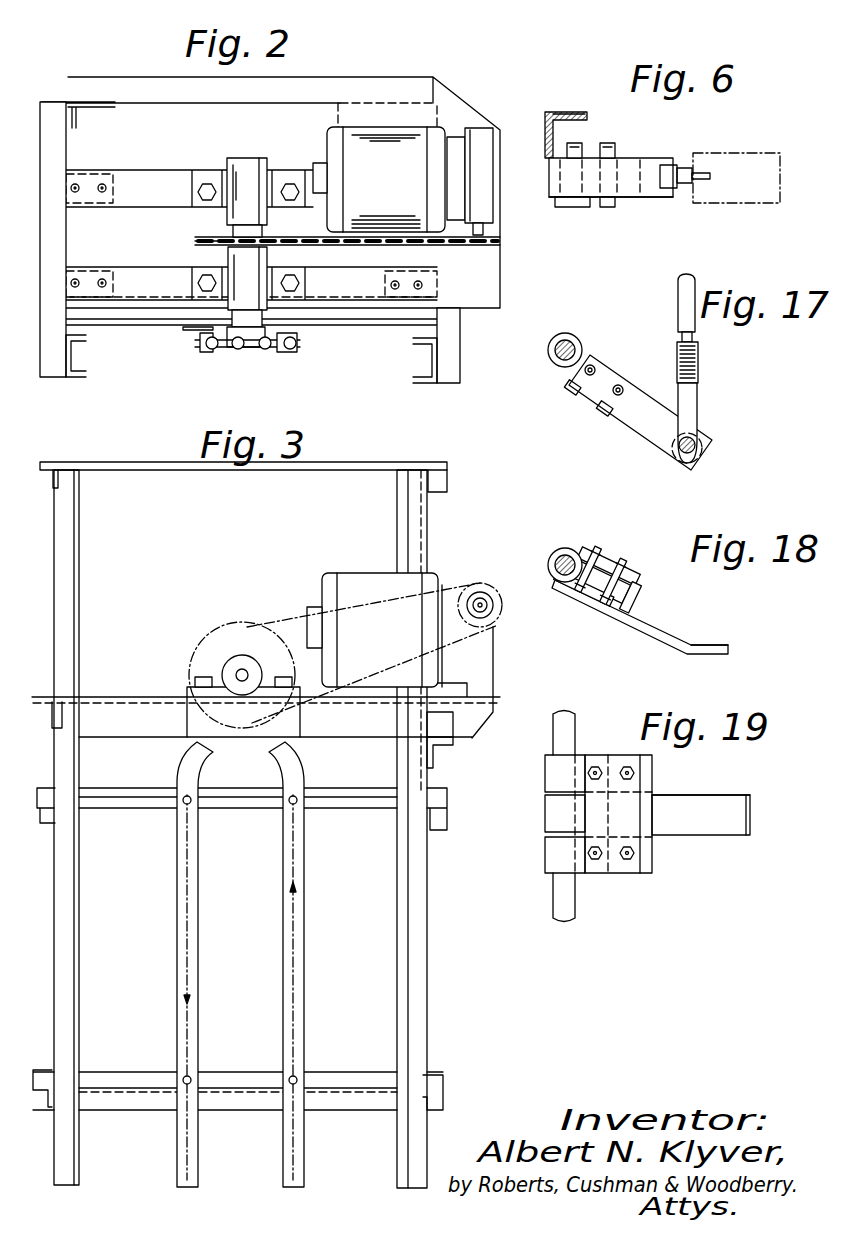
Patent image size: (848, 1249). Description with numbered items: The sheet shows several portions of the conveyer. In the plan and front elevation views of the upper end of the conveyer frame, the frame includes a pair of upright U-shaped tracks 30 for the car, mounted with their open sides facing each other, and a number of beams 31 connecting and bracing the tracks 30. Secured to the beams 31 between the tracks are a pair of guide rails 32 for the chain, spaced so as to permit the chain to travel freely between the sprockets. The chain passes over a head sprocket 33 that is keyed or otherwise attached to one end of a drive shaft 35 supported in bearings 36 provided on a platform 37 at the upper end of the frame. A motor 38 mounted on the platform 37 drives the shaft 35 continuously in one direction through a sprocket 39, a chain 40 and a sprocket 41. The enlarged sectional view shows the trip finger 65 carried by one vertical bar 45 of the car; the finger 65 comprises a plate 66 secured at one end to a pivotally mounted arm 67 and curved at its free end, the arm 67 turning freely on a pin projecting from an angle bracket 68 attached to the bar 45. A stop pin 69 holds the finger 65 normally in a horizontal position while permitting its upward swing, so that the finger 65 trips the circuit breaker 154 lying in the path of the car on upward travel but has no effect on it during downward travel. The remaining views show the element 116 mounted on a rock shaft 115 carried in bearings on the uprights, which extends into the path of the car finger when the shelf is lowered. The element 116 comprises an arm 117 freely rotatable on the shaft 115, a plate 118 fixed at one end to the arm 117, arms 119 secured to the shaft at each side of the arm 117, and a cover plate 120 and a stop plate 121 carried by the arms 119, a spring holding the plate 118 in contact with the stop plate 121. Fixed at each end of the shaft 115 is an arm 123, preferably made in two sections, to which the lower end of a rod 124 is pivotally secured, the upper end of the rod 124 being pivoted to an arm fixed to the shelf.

In FIG. 2, the upright U-shaped tracks 30 is at (72, 360).
In FIG. 3, the upright U-shaped tracks 30 is at (66, 940).
In FIG. 2, the beams 31 is at (380, 333).
In FIG. 3, the beams 31 is at (153, 793).
In FIG. 2, the guide rails 32 is at (196, 340).
In FIG. 3, the guide rails 32 is at (288, 911).
In FIG. 2, the head sprocket 33 is at (250, 348).
In FIG. 2, the drive shaft 35 is at (213, 316).
In FIG. 3, the drive shaft 35 is at (242, 672).
In FIG. 2, the bearings 36 is at (249, 167).
In FIG. 2, the platform 37 is at (143, 163).
In FIG. 2, the motor 38 is at (389, 179).
In FIG. 3, the motor 38 is at (378, 580).
In FIG. 2, the sprocket 39 is at (498, 240).
In FIG. 3, the sprocket 39 is at (485, 583).
In FIG. 2, the chain 40 is at (368, 243).
In FIG. 3, the chain 40 is at (282, 618).
In FIG. 2, the sprocket 41 is at (204, 238).
In FIG. 3, the sprocket 41 is at (225, 640).
In FIG. 6, the vertical bar 45 is at (571, 117).
In FIG. 6, the trip finger 65 is at (659, 151).
In FIG. 6, the plate 66 is at (630, 190).
In FIG. 6, the pivotally mounted arm 67 is at (558, 181).
In FIG. 6, the angle bracket 68 is at (546, 132).
In FIG. 6, the stop pin 69 is at (606, 200).
In FIG. 6, the circuit breaker 154 is at (748, 153).
In FIG. 17, the rock shaft 115 is at (582, 347).
In FIG. 18, the rock shaft 115 is at (563, 553).
In FIG. 19, the rock shaft 115 is at (560, 890).
In FIG. 18, the element 116 is at (646, 634).
In FIG. 19, the element 116 is at (668, 843).
In FIG. 18, the arm 117 is at (573, 590).
In FIG. 19, the arm 117 is at (562, 813).
In FIG. 18, the plate 118 is at (662, 636).
In FIG. 19, the plate 118 is at (701, 815).
In FIG. 18, the arms 119 is at (590, 548).
In FIG. 19, the arms 119 is at (563, 773).
In FIG. 18, the cover plate 120 is at (623, 563).
In FIG. 19, the cover plate 120 is at (628, 813).
In FIG. 18, the stop plate 121 is at (650, 603).
In FIG. 19, the stop plate 121 is at (653, 873).
In FIG. 17, the arm 123 is at (640, 423).
In FIG. 17, the rod 124 is at (698, 393).